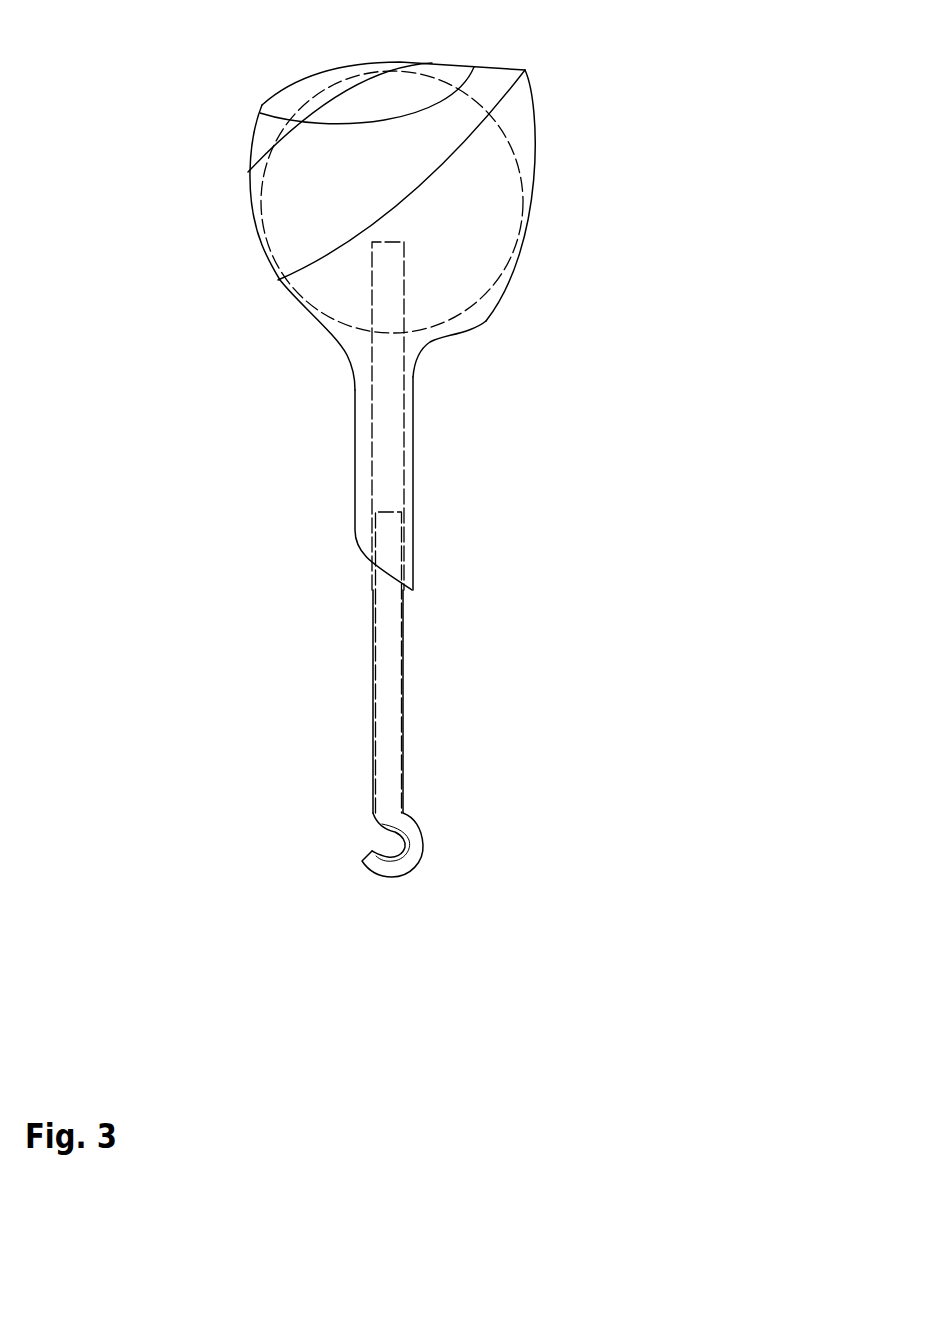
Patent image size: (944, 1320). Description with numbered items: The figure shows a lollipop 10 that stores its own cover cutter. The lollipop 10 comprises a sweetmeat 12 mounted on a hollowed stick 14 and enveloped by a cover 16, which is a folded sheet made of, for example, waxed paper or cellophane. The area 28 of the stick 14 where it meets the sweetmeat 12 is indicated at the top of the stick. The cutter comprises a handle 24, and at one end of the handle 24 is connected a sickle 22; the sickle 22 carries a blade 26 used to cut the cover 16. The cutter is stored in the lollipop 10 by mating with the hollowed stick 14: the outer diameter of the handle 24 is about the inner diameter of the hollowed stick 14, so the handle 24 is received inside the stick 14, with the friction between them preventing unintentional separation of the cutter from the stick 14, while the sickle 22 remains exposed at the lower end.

The lollipop 10 is at (704, 209).
The sweetmeat 12 is at (337, 207).
The hollowed stick 14 is at (387, 479).
The cover 16 is at (485, 325).
The sickle 22 is at (415, 838).
The handle 24 is at (392, 676).
The blade 26 is at (405, 843).
The area of the stick where it meets with the sweetmeat 28 is at (312, 436).